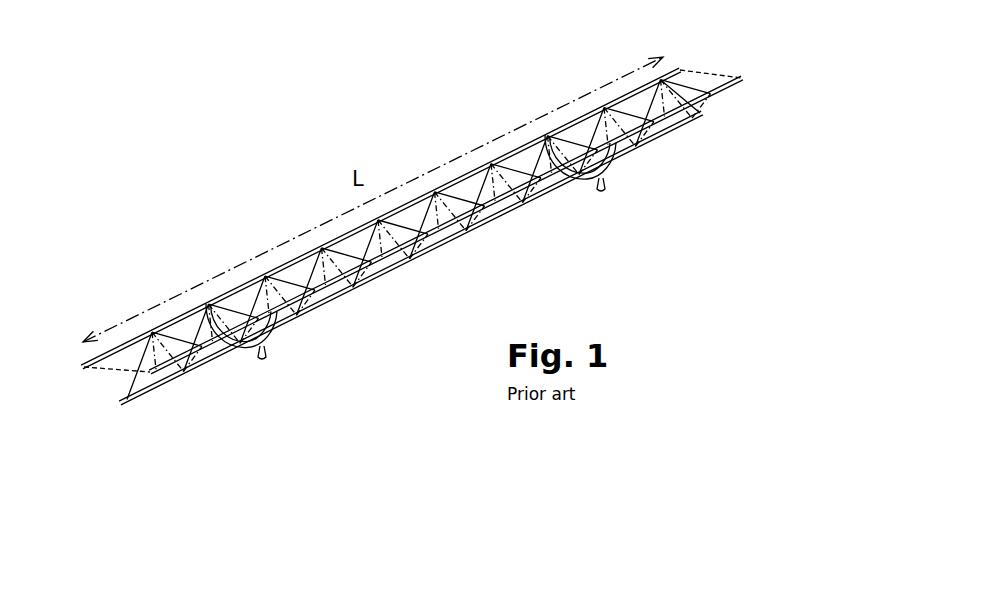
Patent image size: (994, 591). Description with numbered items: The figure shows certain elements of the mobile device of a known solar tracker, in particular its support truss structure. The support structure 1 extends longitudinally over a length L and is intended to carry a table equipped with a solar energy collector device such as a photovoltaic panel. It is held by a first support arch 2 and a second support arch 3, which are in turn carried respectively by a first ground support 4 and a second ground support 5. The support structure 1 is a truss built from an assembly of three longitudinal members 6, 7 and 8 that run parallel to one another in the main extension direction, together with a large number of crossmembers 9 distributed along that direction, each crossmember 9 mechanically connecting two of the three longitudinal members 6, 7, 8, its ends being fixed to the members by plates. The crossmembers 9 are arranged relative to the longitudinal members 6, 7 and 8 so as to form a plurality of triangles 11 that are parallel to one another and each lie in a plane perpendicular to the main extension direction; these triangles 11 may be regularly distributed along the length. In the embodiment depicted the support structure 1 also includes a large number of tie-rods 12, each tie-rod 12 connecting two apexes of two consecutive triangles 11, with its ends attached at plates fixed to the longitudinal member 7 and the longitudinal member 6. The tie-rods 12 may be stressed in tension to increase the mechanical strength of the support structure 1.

The support structure 1 is at (289, 251).
The first support arch 2 is at (278, 330).
The second support arch 3 is at (616, 163).
The first ground support 4 is at (261, 360).
The second ground support 5 is at (601, 188).
The longitudinal member 6 is at (654, 138).
The longitudinal member 7 is at (712, 98).
The longitudinal member 8 is at (610, 105).
The crossmember 9 is at (447, 230).
The triangle 11 is at (383, 224).
The tie-rod 12 is at (417, 203).